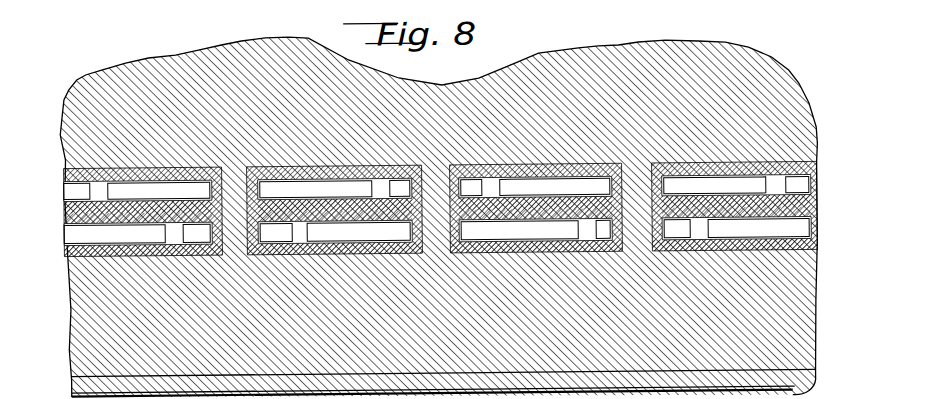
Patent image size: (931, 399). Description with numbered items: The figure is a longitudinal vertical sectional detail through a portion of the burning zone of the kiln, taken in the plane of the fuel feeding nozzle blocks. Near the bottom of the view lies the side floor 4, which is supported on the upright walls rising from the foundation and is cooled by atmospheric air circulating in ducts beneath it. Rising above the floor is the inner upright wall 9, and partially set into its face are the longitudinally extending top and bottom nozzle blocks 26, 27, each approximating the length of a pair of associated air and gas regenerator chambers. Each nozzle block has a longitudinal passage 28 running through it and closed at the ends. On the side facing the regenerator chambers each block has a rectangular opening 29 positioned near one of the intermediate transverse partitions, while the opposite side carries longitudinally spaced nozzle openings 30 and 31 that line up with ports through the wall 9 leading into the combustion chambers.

The side floor 4 is at (70, 301).
The inner upright wall 9 is at (65, 110).
The top nozzle block 26 is at (400, 163).
The bottom nozzle block 27 is at (453, 252).
The longitudinal passage 28 is at (66, 149).
The rectangular opening 29 is at (80, 180).
The nozzle opening 30 is at (64, 204).
The nozzle opening 31 is at (82, 226).